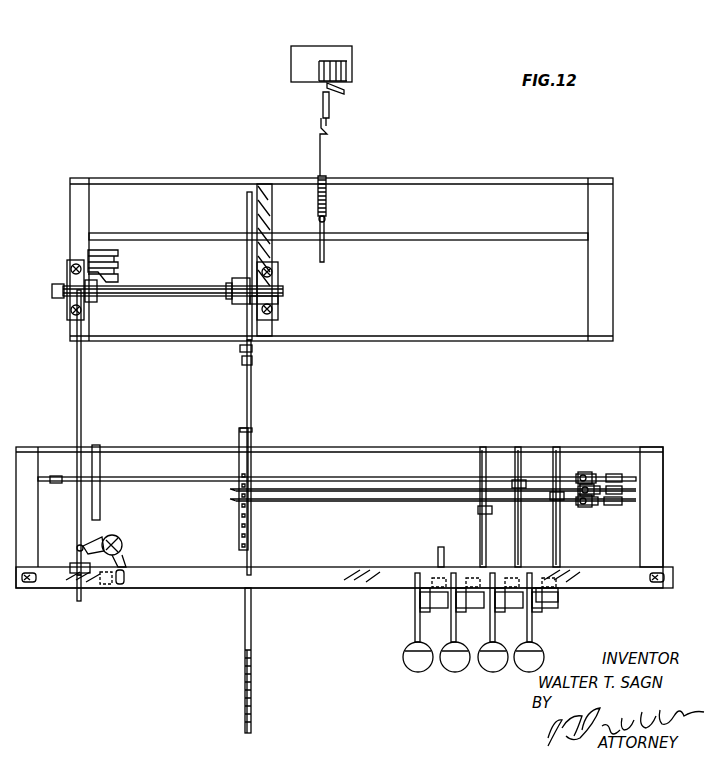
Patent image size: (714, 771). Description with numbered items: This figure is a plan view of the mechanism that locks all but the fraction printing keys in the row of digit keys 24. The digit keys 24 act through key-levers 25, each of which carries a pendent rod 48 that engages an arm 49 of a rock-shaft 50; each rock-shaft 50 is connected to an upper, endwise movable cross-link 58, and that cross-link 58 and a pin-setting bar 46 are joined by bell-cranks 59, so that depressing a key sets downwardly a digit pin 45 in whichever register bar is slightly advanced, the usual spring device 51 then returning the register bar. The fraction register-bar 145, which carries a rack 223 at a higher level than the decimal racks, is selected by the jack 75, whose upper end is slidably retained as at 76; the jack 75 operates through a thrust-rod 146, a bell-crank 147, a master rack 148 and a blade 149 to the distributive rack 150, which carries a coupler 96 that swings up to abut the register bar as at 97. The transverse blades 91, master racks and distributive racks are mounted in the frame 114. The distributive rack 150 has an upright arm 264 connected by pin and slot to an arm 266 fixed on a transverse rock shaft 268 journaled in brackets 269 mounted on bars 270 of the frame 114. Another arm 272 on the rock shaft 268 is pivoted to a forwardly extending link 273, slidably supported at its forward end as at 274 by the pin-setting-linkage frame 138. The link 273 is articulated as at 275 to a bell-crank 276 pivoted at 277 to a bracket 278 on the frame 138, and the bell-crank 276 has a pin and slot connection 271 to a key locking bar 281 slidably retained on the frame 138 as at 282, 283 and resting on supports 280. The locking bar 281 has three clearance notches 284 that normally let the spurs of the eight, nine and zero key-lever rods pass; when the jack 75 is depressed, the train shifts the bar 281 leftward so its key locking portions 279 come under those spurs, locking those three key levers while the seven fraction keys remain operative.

The upper end retainer of jacks 76 is at (340, 46).
The jack 75 is at (349, 75).
The thrust-rod 146 is at (345, 92).
The bell-crank 147 is at (330, 108).
The master rack 148 is at (325, 148).
The bars of frame 270 is at (262, 184).
The frame 114 is at (568, 178).
The distributive rack 150 is at (246, 215).
The blade 149 is at (455, 233).
The brackets 269 is at (70, 262).
The transverse blades 91 is at (126, 256).
The transverse rock shaft 268 is at (158, 270).
The arm 266 is at (238, 278).
The arm 272 is at (84, 296).
The upright arm 264 is at (258, 304).
The link 273 is at (81, 400).
The coupler 96 is at (240, 348).
The coupler abutment 97 is at (242, 362).
The fraction register-bar 145 is at (252, 424).
The pin-setting-linkage frame 138 is at (652, 447).
The key locking bar 281 is at (346, 588).
The slidable retention 282 is at (28, 588).
The slidable retention 283 is at (658, 588).
The cross-link 58 is at (392, 477).
The pin-setting bars 46 is at (96, 472).
The bell-cranks 59 is at (58, 483).
The spring device 51 is at (588, 472).
The rock-shaft 50 is at (486, 456).
The digit pins 45 is at (250, 540).
The pivot 277 is at (122, 543).
The bell-crank 276 is at (100, 536).
The articulation 275 is at (76, 546).
The slidable support 274 is at (92, 574).
The bracket 278 is at (108, 588).
The pin and slot connection 271 is at (124, 576).
The key locking portions 279 is at (444, 566).
The supports 280 is at (436, 578).
The key-levers 25 is at (414, 594).
The pendent rod 48 is at (460, 606).
The clearance notches 284 is at (558, 590).
The arm 49 is at (540, 600).
The keys 24 is at (452, 672).
The rack 223 is at (252, 656).